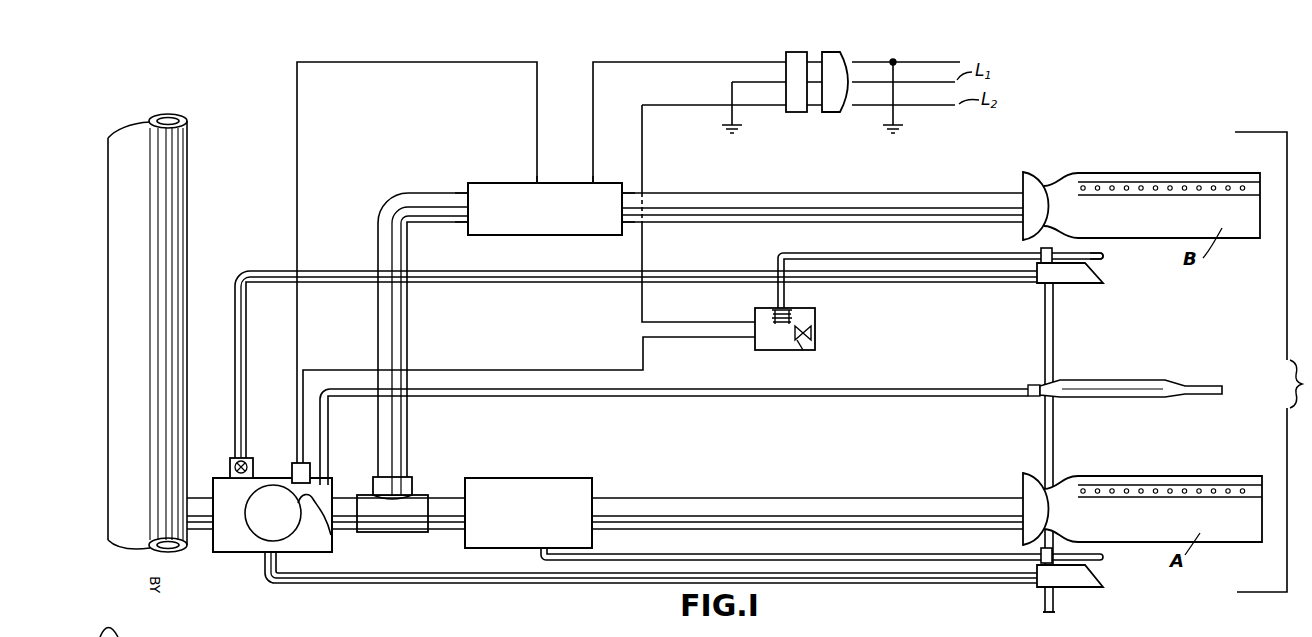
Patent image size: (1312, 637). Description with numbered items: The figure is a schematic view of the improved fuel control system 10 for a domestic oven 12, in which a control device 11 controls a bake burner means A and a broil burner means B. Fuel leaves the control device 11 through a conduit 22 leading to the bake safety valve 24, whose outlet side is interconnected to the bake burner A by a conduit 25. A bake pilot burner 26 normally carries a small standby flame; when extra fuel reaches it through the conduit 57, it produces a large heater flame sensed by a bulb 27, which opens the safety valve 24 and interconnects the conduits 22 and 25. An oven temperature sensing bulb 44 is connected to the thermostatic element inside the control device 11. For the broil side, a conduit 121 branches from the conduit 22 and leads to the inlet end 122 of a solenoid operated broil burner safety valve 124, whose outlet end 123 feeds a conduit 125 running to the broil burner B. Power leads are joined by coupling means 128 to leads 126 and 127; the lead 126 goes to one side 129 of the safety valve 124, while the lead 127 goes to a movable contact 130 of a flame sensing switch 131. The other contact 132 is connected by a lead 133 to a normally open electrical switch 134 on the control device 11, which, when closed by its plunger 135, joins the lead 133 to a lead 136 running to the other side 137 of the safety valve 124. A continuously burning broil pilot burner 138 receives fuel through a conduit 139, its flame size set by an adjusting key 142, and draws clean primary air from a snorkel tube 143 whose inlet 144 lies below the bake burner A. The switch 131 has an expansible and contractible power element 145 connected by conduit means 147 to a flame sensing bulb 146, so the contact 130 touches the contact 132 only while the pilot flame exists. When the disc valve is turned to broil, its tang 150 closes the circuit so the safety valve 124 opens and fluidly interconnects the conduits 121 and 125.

The fuel control system 10 is at (1072, 83).
The control device 11 is at (295, 499).
The domestic oven 12 is at (1257, 132).
The conduit 22 is at (443, 495).
The safety valve 24 is at (548, 480).
The conduit 25 is at (803, 496).
The bake pilot burner 26 is at (1085, 574).
The bulb 27 is at (1105, 556).
The oven temperature sensing bulb 44 is at (1130, 380).
The conduit 57 is at (590, 583).
The conduit 121 is at (405, 345).
The inlet end 122 is at (468, 184).
The outlet end 123 is at (635, 163).
The solenoid operated broil burner safety valve 124 is at (510, 182).
The conduit 125 is at (848, 193).
The lead 126 is at (631, 61).
The lead 127 is at (685, 104).
The coupling means 128 is at (817, 48).
The side of the broil burner safety valve 129 is at (593, 182).
The movable contact 130 is at (813, 320).
The flame sensing switch 131 is at (826, 333).
The contact 132 is at (803, 346).
The lead 133 is at (557, 368).
The electrical switch 134 is at (293, 462).
The plunger 135 is at (323, 486).
The lead 136 is at (297, 215).
The other side of the broil burner safety valve 137 is at (540, 182).
The broil pilot burner 138 is at (1080, 277).
The conduit 139 is at (732, 248).
The adjusting key 142 is at (232, 458).
The snorkel tube 143 is at (1045, 343).
The inlet 144 is at (1048, 613).
The expansible and contractible power element 145 is at (789, 316).
The flame sensing bulb 146 is at (1104, 257).
The conduit means 147 is at (922, 240).
The tang 150 is at (326, 535).